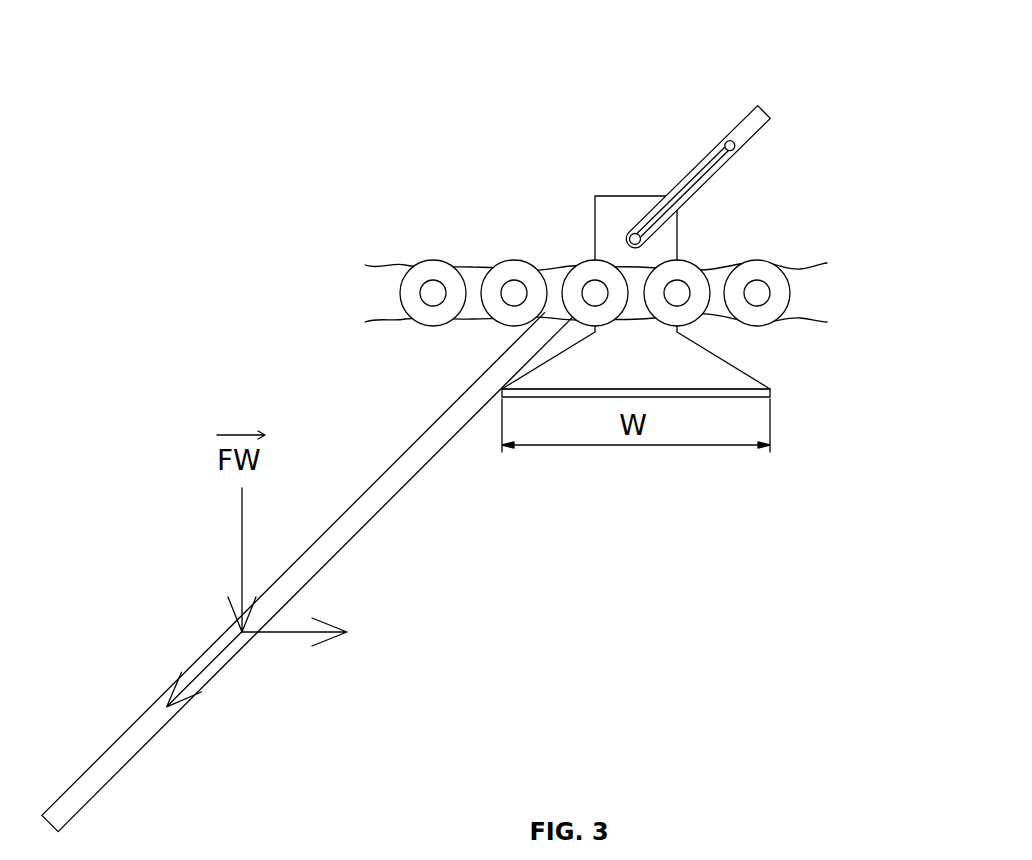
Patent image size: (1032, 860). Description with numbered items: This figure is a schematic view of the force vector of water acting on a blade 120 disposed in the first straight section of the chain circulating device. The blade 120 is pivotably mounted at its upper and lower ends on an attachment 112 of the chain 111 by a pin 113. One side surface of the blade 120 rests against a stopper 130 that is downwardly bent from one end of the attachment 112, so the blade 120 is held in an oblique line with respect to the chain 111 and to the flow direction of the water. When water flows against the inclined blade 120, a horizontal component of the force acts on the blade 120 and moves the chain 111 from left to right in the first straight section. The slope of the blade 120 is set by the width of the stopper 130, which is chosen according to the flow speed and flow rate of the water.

The chain 111 is at (465, 270).
The attachment 112 is at (627, 195).
The pin 113 is at (643, 243).
The blade 120 is at (380, 481).
The stopper 130 is at (773, 387).